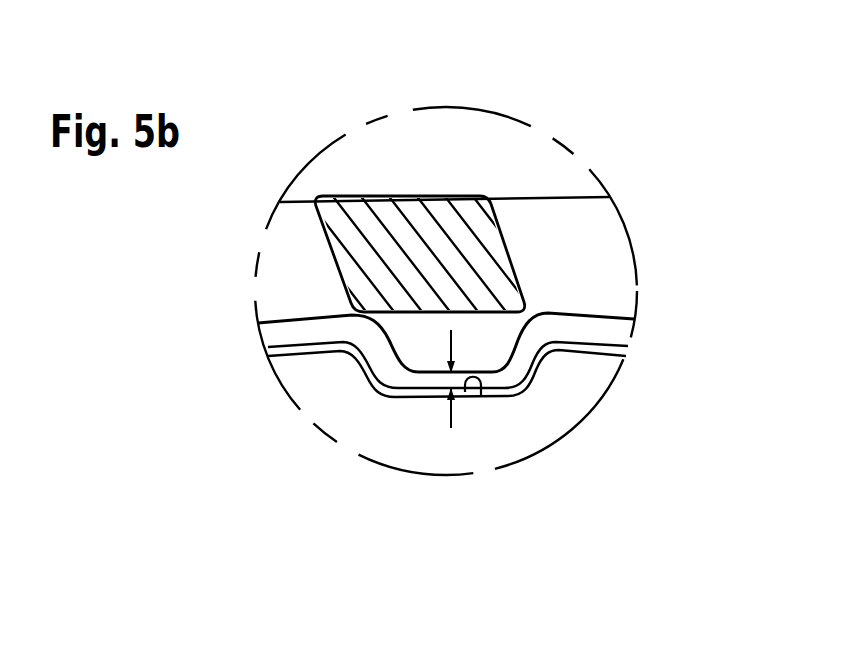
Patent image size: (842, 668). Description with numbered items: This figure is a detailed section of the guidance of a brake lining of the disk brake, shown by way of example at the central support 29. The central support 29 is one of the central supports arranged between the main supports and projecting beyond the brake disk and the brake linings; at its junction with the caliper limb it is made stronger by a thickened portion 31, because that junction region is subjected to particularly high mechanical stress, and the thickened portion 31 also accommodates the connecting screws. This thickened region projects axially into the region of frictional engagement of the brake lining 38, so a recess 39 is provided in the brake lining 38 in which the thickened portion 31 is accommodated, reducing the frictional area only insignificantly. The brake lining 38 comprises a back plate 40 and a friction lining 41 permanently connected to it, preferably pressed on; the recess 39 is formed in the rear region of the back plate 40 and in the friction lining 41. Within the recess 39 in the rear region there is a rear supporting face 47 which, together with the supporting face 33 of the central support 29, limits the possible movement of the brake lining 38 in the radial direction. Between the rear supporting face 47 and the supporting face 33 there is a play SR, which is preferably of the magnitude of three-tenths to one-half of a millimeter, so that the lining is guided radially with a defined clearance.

The central support 29 is at (405, 227).
The thickened portion 31 is at (488, 348).
The supporting face of the central support 33 is at (445, 381).
The brake lining 38 is at (452, 447).
The recess 39 is at (523, 348).
The back plate 40 is at (307, 340).
The friction lining 41 is at (575, 382).
The rear supporting face 47 is at (481, 396).
The play SR is at (418, 385).